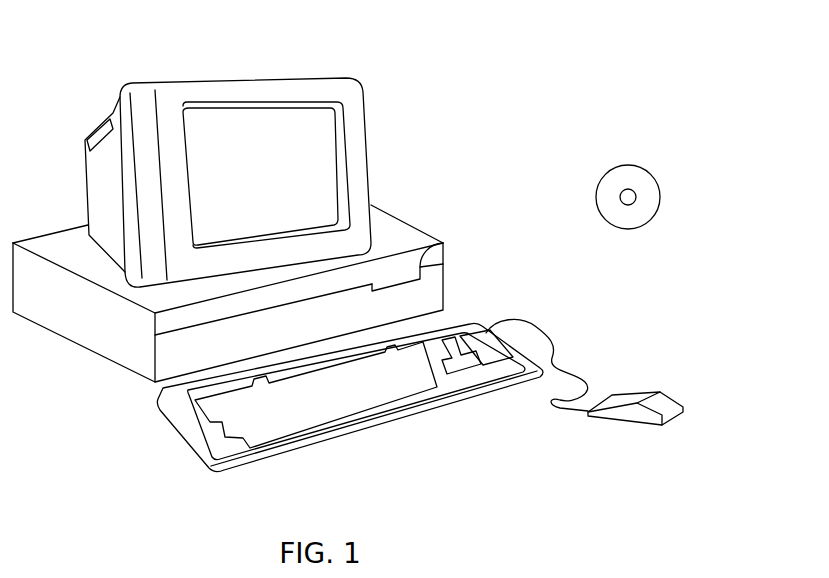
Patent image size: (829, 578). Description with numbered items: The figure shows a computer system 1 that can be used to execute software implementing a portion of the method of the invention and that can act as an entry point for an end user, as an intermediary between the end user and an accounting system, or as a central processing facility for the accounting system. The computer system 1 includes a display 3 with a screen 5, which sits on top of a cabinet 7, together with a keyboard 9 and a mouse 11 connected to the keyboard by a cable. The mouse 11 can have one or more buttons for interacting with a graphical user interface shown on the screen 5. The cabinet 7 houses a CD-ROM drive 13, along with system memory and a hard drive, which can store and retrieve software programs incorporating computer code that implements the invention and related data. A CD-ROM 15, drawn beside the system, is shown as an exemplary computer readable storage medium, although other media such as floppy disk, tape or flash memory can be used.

The computer system 1 is at (557, 52).
The display 3 is at (367, 186).
The screen 5 is at (337, 128).
The cabinet 7 is at (118, 366).
The keyboard 9 is at (352, 437).
The mouse 11 is at (677, 398).
The CD-ROM drive 13 is at (443, 243).
The CD-ROM 15 is at (643, 167).